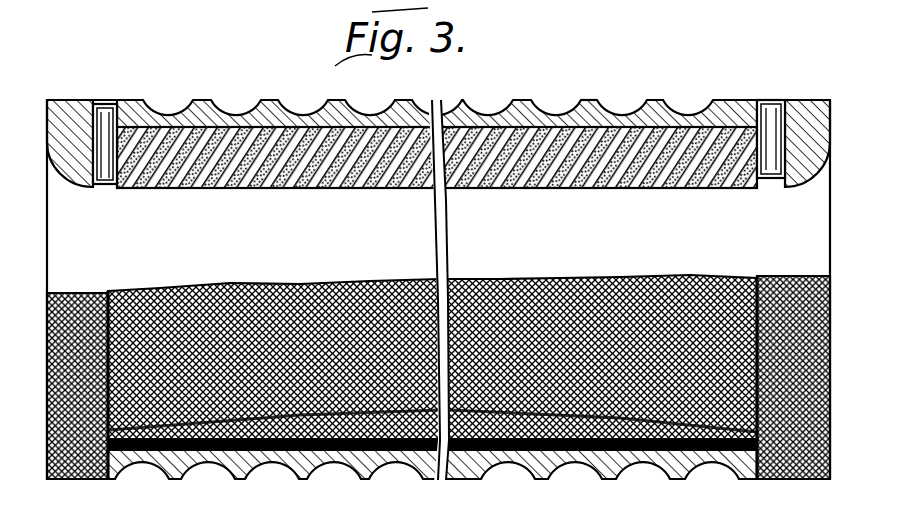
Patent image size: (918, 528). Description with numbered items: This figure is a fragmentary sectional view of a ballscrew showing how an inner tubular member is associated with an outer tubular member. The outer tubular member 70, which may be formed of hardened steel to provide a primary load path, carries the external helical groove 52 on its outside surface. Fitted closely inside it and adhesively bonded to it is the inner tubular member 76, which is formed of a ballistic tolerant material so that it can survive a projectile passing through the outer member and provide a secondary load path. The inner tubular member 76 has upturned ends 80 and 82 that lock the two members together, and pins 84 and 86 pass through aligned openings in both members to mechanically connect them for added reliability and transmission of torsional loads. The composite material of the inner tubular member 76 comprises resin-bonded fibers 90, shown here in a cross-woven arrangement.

The external helical groove 52 is at (490, 113).
The outer tubular member 70 is at (588, 100).
The inner tubular member 76 is at (292, 189).
The upturned end 80 is at (72, 107).
The upturned end 82 is at (807, 110).
The pin 84 is at (113, 107).
The pin 86 is at (771, 122).
The resin-bonded fibers 90 is at (494, 303).